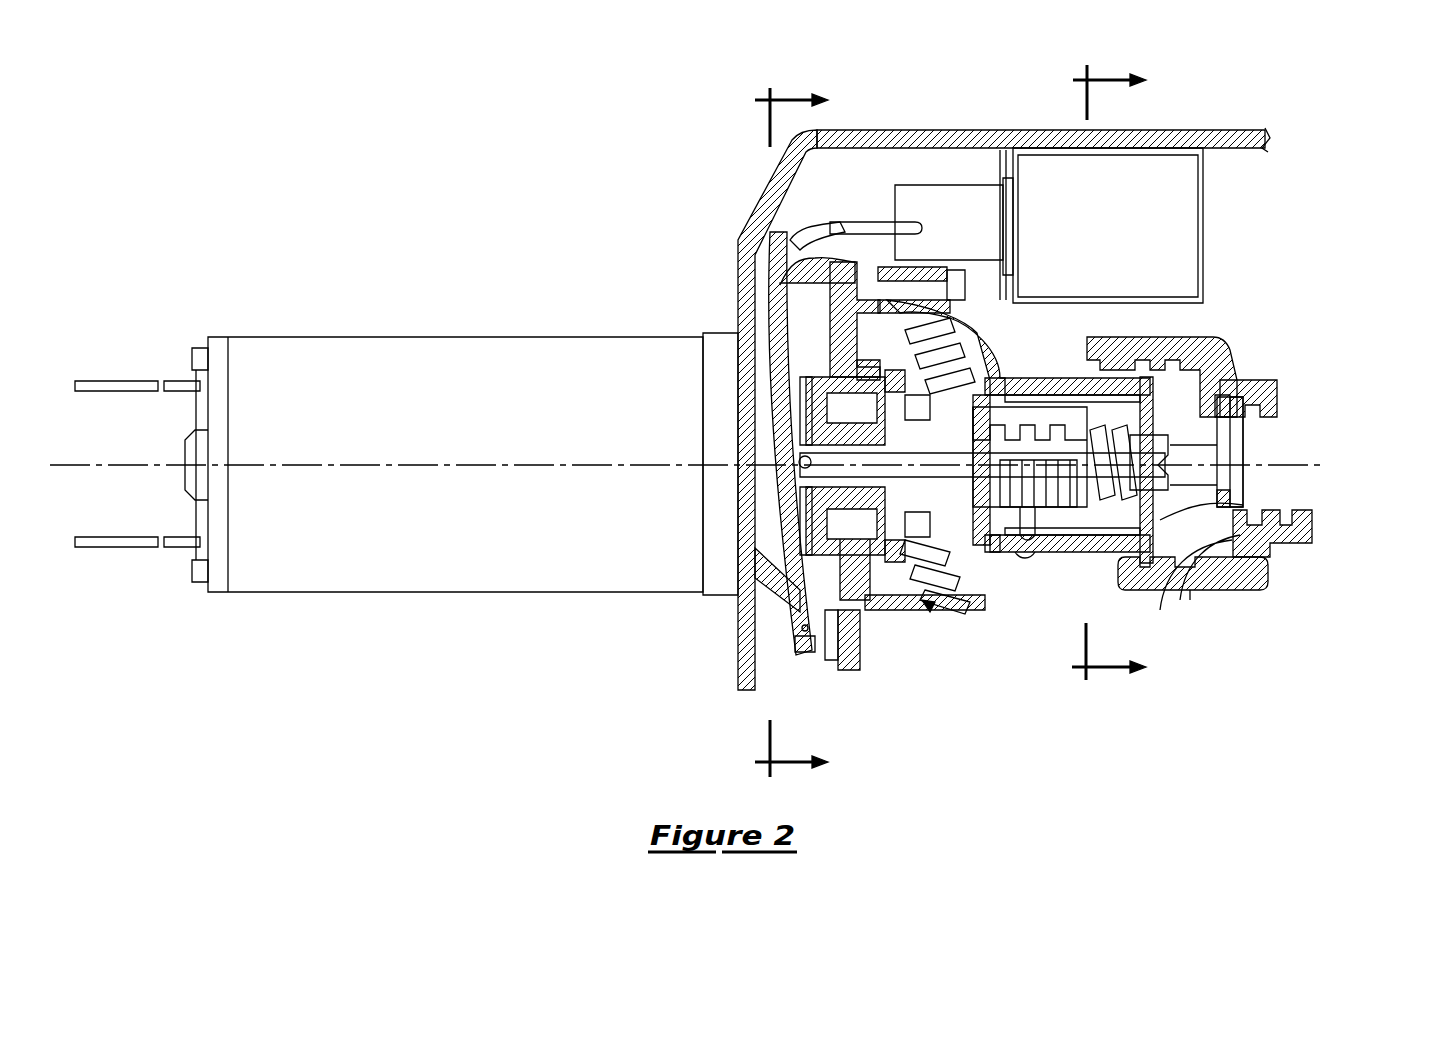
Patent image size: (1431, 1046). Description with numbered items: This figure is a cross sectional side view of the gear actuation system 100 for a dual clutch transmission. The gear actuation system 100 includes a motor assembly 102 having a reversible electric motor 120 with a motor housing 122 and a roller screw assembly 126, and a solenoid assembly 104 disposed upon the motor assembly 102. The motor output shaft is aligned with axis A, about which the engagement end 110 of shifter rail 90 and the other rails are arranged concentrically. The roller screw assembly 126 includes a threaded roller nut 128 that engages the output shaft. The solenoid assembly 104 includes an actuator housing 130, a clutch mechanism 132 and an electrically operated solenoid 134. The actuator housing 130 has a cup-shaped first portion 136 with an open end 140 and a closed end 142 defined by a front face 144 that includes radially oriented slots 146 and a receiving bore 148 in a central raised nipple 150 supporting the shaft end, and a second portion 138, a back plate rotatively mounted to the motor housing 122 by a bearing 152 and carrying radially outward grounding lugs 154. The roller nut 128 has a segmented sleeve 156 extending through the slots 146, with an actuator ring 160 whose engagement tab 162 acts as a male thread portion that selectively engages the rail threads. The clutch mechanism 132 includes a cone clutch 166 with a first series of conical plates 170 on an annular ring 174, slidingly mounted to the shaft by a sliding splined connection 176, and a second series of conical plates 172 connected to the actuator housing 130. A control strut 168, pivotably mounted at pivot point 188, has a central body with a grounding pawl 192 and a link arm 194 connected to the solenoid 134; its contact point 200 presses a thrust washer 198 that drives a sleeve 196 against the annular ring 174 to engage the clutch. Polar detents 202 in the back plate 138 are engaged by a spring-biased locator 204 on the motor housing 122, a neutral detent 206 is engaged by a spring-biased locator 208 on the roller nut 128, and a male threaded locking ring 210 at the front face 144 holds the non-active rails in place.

The axis A is at (1335, 462).
The gear actuation system 100 is at (492, 216).
The motor assembly 102 is at (462, 315).
The solenoid assembly 104 is at (948, 178).
The engagement end 110 is at (1240, 345).
The reversible electric motor 120 is at (350, 337).
The motor housing 122 is at (738, 665).
The roller screw assembly 126 is at (1125, 375).
The roller nut 128 is at (1082, 552).
The actuator housing 130 is at (1000, 340).
The clutch mechanism 132 is at (955, 625).
The electrically operated solenoid 134 is at (1203, 195).
The first portion 136 is at (1010, 270).
The second portion 138 is at (862, 672).
The open end 140 is at (870, 622).
The closed end 142 is at (1215, 590).
The front face 144 is at (1245, 570).
The slots 146 is at (1255, 380).
The receiving bore 148 is at (1270, 532).
The central raised nipple 150 is at (1235, 455).
The bearing 152 is at (808, 383).
The grounding lugs 154 is at (800, 300).
The segmented sleeve 156 is at (1243, 497).
The actuator ring 160 is at (1240, 430).
The engagement tab 162 is at (1270, 408).
The cone clutch 166 is at (840, 325).
The control strut 168 is at (800, 318).
The first series of conical plates 170 is at (930, 612).
The second series of conical plates 172 is at (985, 385).
The annular ring 174 is at (925, 520).
The sliding splined connection 176 is at (930, 430).
The pivot point 188 is at (800, 640).
The grounding pawl 192 is at (800, 245).
The link arm 194 is at (878, 210).
The sleeve 196 is at (800, 505).
The thrust washer 198 is at (810, 400).
The contact point 200 is at (800, 450).
The polar detents 202 is at (828, 620).
The spring-biased locator 204 is at (800, 580).
The neutral detent 206 is at (1045, 552).
The spring-biased locator 208 is at (998, 555).
The locking ring 210 is at (1190, 590).
The shifter rail 90 is at (1240, 345).